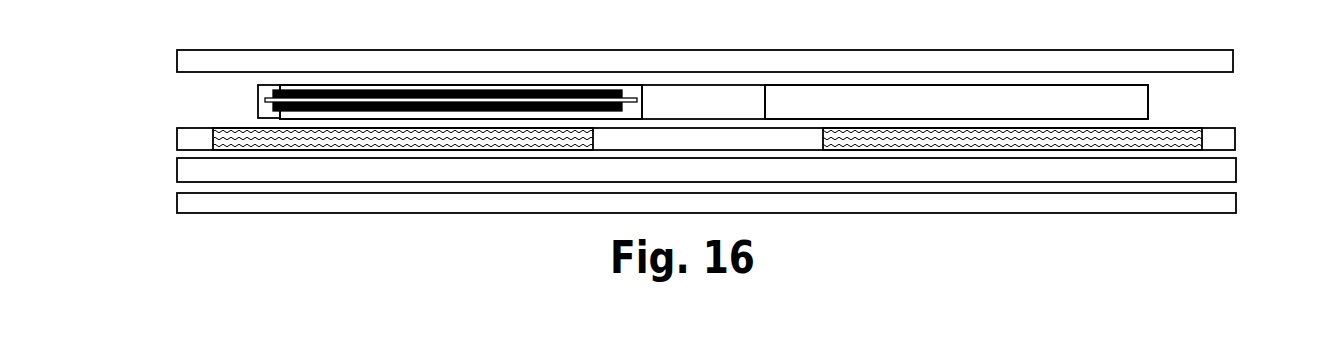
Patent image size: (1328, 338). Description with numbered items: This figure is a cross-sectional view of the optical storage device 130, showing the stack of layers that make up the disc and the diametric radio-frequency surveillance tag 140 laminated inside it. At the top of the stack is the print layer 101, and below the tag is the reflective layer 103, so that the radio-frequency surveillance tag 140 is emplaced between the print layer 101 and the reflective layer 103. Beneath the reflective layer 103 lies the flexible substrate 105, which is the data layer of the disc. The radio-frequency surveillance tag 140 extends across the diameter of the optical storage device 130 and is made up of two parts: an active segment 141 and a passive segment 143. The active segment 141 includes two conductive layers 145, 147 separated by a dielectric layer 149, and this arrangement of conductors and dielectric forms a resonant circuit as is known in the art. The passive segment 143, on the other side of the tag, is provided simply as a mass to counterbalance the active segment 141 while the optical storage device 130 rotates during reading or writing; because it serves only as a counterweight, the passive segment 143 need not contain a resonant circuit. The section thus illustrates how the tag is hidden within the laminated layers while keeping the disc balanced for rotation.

The print layer 101 is at (1233, 63).
The reflective layer 103 is at (1237, 143).
The flexible substrate 105 is at (1230, 170).
The optical storage device 130 is at (848, 262).
The diametric radio-frequency surveillance tag 140 is at (1148, 105).
The active segment 141 is at (562, 85).
The passive segment 143 is at (917, 88).
The conductive layer 145 is at (282, 90).
The conductive layer 147 is at (265, 100).
The dielectric layer 149 is at (282, 111).